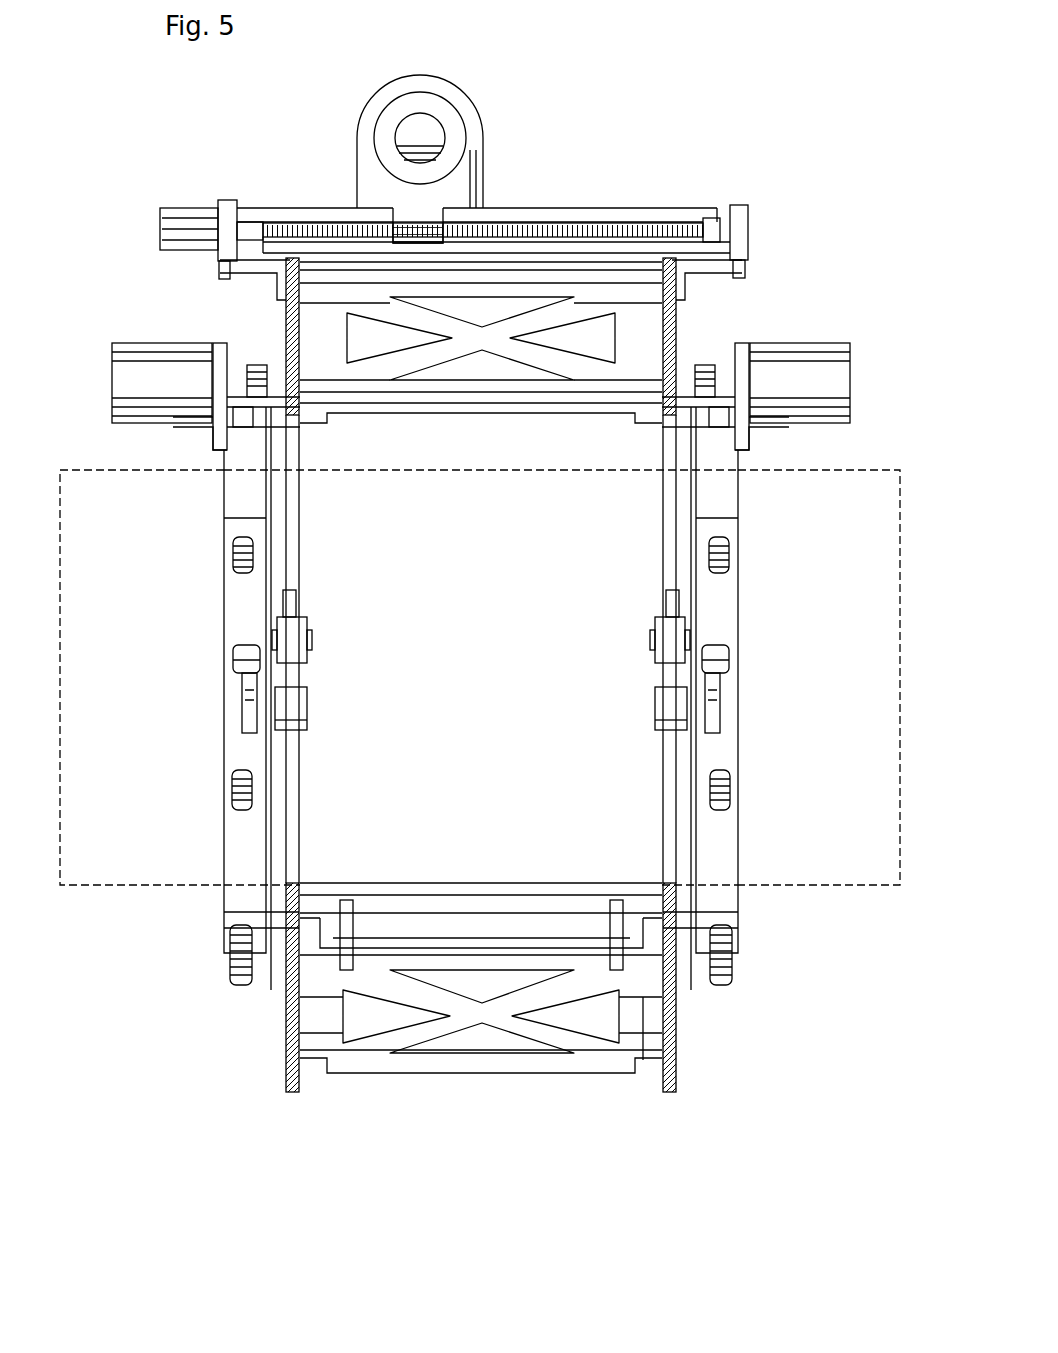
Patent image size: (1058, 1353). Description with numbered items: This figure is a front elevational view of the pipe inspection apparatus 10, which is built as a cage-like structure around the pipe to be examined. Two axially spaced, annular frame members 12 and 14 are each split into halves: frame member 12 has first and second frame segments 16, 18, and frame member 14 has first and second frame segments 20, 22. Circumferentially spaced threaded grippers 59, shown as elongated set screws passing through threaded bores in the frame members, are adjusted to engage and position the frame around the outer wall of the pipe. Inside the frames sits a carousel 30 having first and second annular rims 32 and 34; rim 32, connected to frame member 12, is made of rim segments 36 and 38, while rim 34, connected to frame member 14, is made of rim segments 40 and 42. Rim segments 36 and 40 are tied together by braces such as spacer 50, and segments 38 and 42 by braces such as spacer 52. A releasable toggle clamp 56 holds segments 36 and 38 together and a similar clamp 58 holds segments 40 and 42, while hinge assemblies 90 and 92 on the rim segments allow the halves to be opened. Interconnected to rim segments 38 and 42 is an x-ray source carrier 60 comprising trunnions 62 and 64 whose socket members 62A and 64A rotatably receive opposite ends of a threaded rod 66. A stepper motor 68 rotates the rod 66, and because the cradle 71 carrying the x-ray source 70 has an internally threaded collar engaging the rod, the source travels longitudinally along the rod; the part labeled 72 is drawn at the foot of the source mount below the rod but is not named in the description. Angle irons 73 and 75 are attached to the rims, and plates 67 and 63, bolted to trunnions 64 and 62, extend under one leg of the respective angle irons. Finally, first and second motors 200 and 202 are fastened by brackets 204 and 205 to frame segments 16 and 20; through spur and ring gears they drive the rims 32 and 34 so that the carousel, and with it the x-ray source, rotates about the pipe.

The pipe inspection apparatus 10 is at (798, 921).
The first annular frame member 12 is at (768, 621).
The second annular frame member 14 is at (168, 642).
The first frame segment 16 is at (717, 488).
The second frame segment 18 is at (713, 855).
The first frame segment 20 is at (243, 503).
The second frame segment 22 is at (243, 755).
The carousel 30 is at (481, 1043).
The first rim 32 is at (763, 863).
The second rim 34 is at (200, 893).
The first rim segment 36 is at (677, 1005).
The second rim segment 38 is at (672, 343).
The first rim segment 40 is at (293, 987).
The second rim segment 42 is at (292, 342).
The spacer 50 is at (647, 1033).
The spacer 52 is at (642, 335).
The toggle clamp 56 is at (716, 720).
The clamp 58 is at (247, 705).
The threaded gripper 59 is at (253, 550).
The x-ray source carrier 60 is at (765, 193).
The first trunnion 62 is at (748, 248).
The socket member 62A is at (714, 230).
The plate 63 is at (746, 270).
The second trunnion 64 is at (228, 217).
The socket member 64A is at (251, 230).
The threaded rod 66 is at (574, 234).
The plate 67 is at (226, 268).
The stepper motor 68 is at (182, 217).
The x-ray source 70 is at (473, 126).
The cradle 71 is at (473, 138).
The eye bolt shank 72 is at (440, 236).
The angle iron 73 is at (284, 294).
The angle iron 75 is at (687, 297).
The hinge assembly 90 is at (626, 678).
The hinge assembly 92 is at (339, 637).
The first motor 200 is at (827, 367).
The second motor 202 is at (150, 375).
The bracket 204 is at (773, 423).
The bracket 205 is at (207, 416).